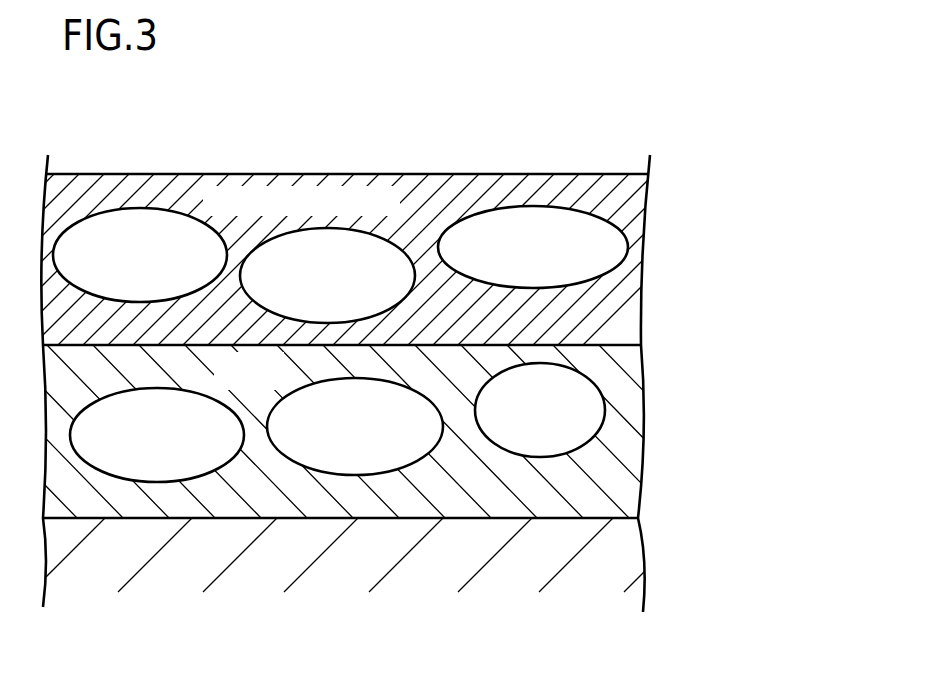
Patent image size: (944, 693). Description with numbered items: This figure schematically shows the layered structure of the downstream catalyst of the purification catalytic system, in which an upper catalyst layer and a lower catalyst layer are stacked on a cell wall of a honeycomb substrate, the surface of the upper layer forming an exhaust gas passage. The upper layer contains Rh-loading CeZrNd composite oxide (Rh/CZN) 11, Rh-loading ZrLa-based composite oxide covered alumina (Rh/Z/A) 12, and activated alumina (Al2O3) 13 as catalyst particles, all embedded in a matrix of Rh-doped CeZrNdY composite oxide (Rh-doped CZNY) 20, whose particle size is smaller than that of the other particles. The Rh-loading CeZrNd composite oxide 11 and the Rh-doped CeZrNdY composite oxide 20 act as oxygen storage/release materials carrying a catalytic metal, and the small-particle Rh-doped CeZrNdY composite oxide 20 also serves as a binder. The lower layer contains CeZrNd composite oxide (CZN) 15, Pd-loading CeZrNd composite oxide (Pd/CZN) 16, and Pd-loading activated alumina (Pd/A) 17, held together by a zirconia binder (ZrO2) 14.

The Rh-loading CeZrNd composite oxide (Rh/CZN) 11 is at (112, 208).
The Rh-loading ZrLa-based composite oxide covered alumina (Rh/Z/A) 12 is at (390, 238).
The activated alumina (Al2O3) 13 is at (520, 205).
The zirconia binder (ZrO2) 14 is at (260, 493).
The CeZrNd composite oxide (CZN) 15 is at (550, 457).
The Pd-loading CeZrNd composite oxide (Pd/CZN) 16 is at (153, 482).
The Pd-loading activated alumina (Pd/A) 17 is at (348, 475).
The Rh-doped CeZrNdY composite oxide (Rh-doped CZNY) 20 is at (190, 188).